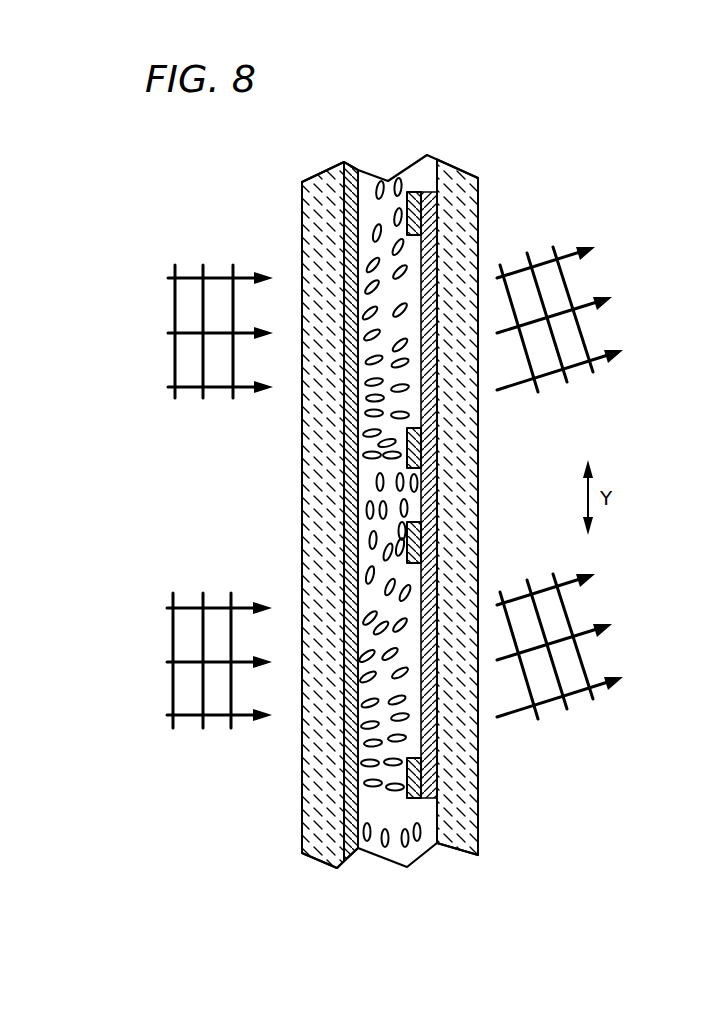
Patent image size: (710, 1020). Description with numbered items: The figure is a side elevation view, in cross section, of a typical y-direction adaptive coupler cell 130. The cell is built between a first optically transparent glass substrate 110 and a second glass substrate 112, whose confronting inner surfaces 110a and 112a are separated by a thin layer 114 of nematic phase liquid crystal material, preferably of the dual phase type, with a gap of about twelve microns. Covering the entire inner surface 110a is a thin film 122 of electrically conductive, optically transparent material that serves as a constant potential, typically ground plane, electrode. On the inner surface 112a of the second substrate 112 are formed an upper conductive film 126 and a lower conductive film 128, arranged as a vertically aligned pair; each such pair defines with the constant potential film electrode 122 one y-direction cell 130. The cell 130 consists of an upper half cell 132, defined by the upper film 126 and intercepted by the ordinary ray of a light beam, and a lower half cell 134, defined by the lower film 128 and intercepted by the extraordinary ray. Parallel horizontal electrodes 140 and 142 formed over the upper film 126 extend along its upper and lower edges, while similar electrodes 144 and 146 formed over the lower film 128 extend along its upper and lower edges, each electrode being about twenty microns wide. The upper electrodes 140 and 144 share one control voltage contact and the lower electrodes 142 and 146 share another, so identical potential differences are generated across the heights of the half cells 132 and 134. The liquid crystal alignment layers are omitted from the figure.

The first glass substrate 110 is at (320, 188).
The inner surface of first substrate 110a is at (343, 183).
The second glass substrate 112 is at (463, 192).
The inner surface of second substrate 112a is at (432, 174).
The liquid crystal layer 114 is at (403, 500).
The electrically conductive film 122 is at (348, 250).
The upper half cell film 126 is at (440, 252).
The lower half cell film 128 is at (430, 735).
The y-direction adaptive coupler cell 130 is at (192, 494).
The upper half cell 132 is at (280, 417).
The lower half cell 134 is at (281, 571).
The upper electrode of upper half cell 140 is at (414, 192).
The lower electrode of upper half cell 142 is at (432, 480).
The upper electrode of lower half cell 144 is at (418, 512).
The lower electrode of lower half cell 146 is at (412, 800).